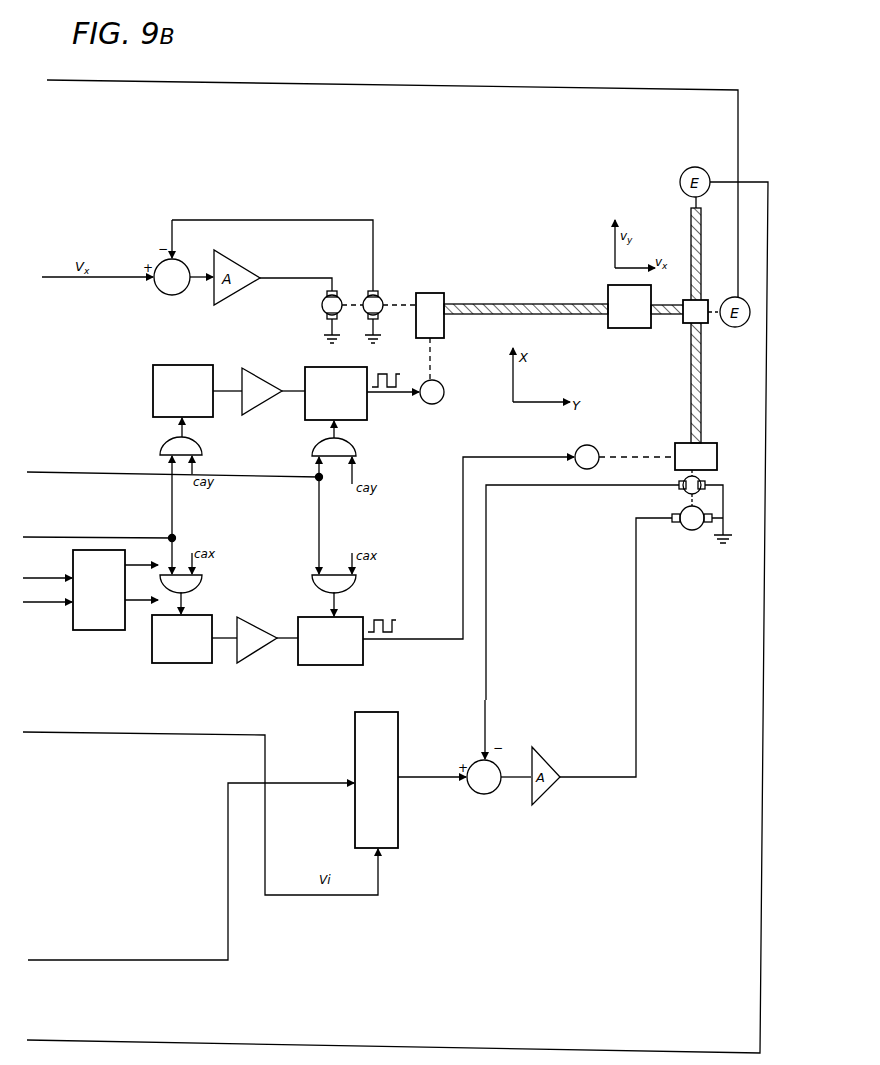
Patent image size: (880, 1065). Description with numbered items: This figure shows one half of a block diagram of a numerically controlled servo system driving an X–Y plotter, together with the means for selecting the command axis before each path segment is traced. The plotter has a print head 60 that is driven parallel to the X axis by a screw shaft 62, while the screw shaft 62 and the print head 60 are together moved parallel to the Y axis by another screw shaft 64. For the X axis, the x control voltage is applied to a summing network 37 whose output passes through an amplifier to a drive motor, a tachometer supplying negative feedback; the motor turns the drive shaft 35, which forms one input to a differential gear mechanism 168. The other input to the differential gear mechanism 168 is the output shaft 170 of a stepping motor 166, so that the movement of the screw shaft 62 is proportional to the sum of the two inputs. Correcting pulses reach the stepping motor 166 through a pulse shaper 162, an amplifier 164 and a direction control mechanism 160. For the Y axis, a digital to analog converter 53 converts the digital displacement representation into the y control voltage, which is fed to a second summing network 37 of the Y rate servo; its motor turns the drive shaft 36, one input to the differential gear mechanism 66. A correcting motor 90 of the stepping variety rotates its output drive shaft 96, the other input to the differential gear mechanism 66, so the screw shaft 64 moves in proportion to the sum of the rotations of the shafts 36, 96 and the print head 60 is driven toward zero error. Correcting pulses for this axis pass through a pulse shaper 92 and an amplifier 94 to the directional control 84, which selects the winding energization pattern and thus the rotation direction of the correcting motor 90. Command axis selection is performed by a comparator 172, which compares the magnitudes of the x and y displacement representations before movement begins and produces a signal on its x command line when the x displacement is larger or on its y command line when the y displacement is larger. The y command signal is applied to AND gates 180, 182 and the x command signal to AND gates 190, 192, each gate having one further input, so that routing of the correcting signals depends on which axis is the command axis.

The summing network 37 is at (192, 265).
The input drive member 35 is at (400, 305).
The differential gear mechanism 168 is at (444, 294).
The screw shaft 62 is at (524, 304).
The print head 60 is at (624, 328).
The output shaft 170 is at (433, 370).
The stepping motor 166 is at (445, 398).
The pulse shaper 162 is at (170, 365).
The amplifier 164 is at (258, 357).
The direction control mechanism 160 is at (322, 367).
The AND gate 180 is at (197, 442).
The AND gate 182 is at (355, 452).
The AND gate 190 is at (196, 589).
The AND gate 192 is at (352, 590).
The comparator 172 is at (82, 630).
The pulse shaper 92 is at (170, 663).
The amplifier 94 is at (241, 663).
The directional control 84 is at (328, 665).
The correcting motor 90 is at (595, 447).
The output drive shaft 96 is at (627, 457).
The differential gear mechanism 66 is at (717, 444).
The screw shaft 64 is at (712, 394).
The drive shaft 36 is at (706, 481).
The digital to analog converter 53 is at (398, 738).